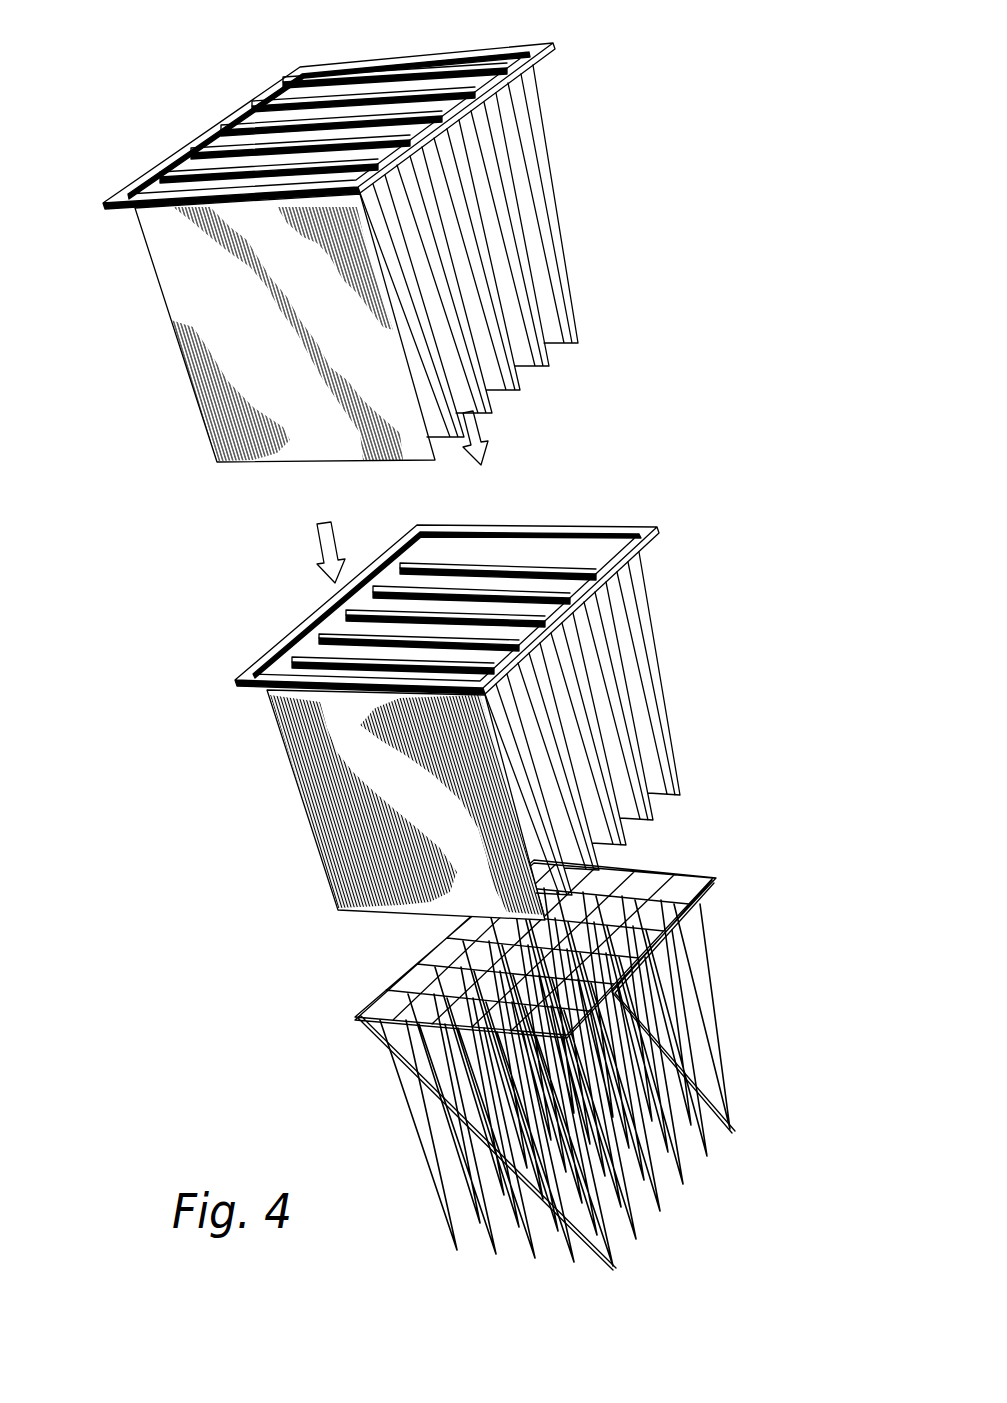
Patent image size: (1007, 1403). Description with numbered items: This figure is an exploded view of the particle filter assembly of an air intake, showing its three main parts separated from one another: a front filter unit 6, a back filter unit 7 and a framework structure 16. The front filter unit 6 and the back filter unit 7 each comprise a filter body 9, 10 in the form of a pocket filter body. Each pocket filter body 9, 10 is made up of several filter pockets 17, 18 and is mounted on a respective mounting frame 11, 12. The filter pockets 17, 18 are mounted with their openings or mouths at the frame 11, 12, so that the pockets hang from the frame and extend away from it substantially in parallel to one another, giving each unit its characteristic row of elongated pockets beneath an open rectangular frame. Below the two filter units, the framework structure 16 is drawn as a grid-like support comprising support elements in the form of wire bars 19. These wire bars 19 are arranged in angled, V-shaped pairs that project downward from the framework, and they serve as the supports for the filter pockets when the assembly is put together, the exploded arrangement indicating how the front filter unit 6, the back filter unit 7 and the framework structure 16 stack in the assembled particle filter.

The front filter unit 6 is at (385, 243).
The back filter unit 7 is at (498, 680).
The filter body 9 is at (246, 344).
The filter body 10 is at (338, 820).
The mounting frame 11 is at (557, 45).
The mounting frame 12 is at (661, 522).
The framework structure 16 is at (587, 1065).
The filter pockets 17 is at (556, 320).
The filter pockets 18 is at (667, 775).
The wire bars 19 is at (702, 942).